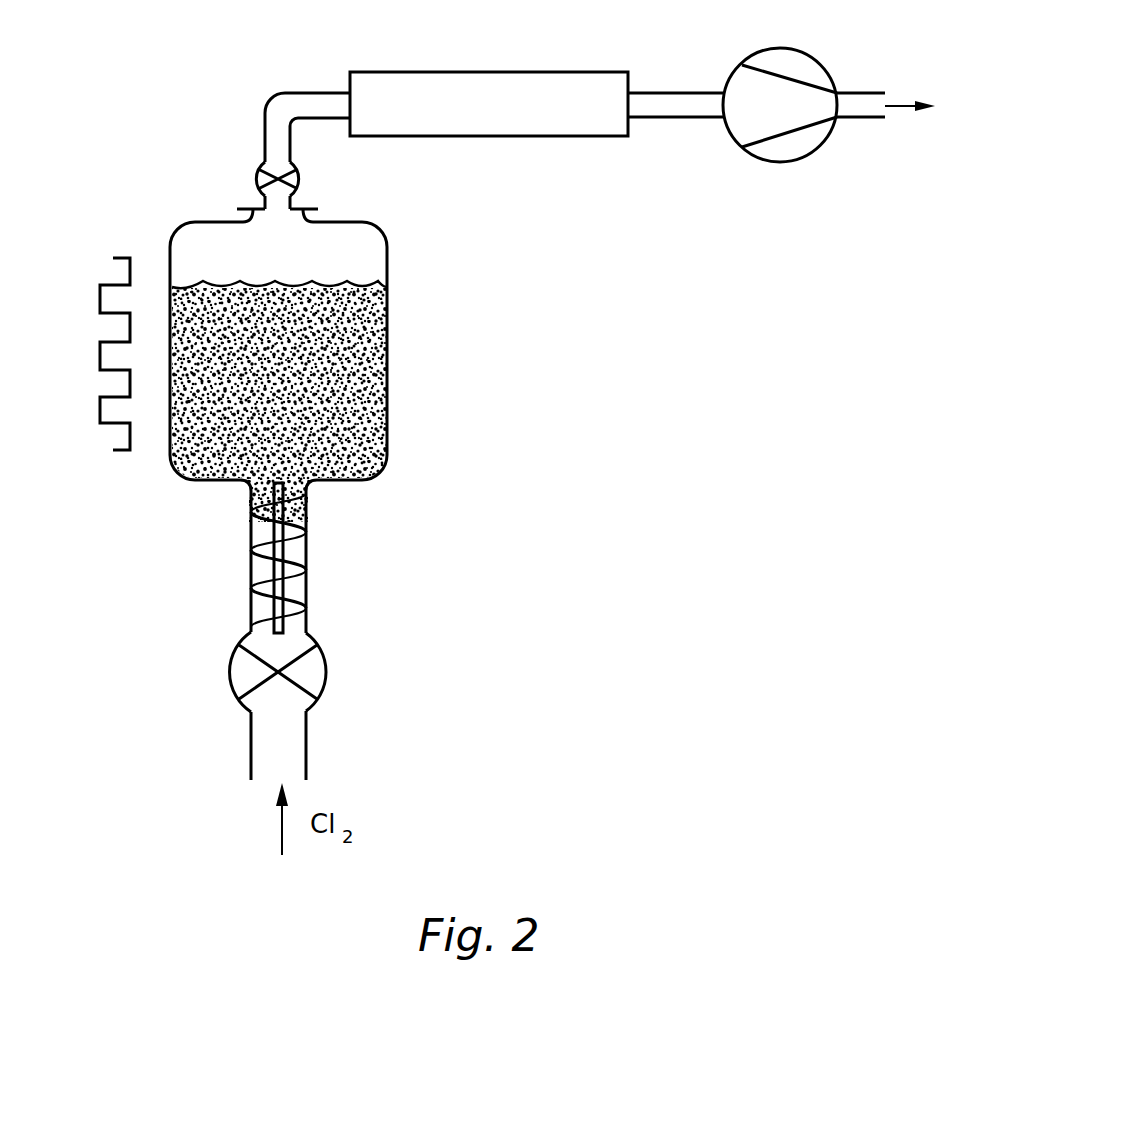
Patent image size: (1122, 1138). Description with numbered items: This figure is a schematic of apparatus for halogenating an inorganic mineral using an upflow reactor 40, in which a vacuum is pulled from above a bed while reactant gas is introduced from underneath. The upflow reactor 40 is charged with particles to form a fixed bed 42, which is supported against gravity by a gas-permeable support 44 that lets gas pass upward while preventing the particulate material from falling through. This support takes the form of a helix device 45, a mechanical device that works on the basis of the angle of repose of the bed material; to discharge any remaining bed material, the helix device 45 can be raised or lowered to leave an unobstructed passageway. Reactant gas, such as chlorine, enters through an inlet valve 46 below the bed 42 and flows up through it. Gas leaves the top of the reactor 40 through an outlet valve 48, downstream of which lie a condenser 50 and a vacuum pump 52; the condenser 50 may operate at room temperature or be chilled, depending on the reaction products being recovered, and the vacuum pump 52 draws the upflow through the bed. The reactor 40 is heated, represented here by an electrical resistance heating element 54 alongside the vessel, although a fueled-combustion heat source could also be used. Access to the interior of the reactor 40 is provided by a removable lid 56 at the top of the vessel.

The upflow reactor 40 is at (480, 413).
The fixed bed 42 is at (365, 380).
The gas-permeable support 44 is at (222, 562).
The helix device 45 is at (306, 558).
The inlet valve 46 is at (327, 665).
The outlet valve 48 is at (302, 182).
The condenser 50 is at (547, 72).
The vacuum pump 52 is at (758, 50).
The electrical resistance heating element 54 is at (100, 352).
The removable lid 56 is at (245, 207).